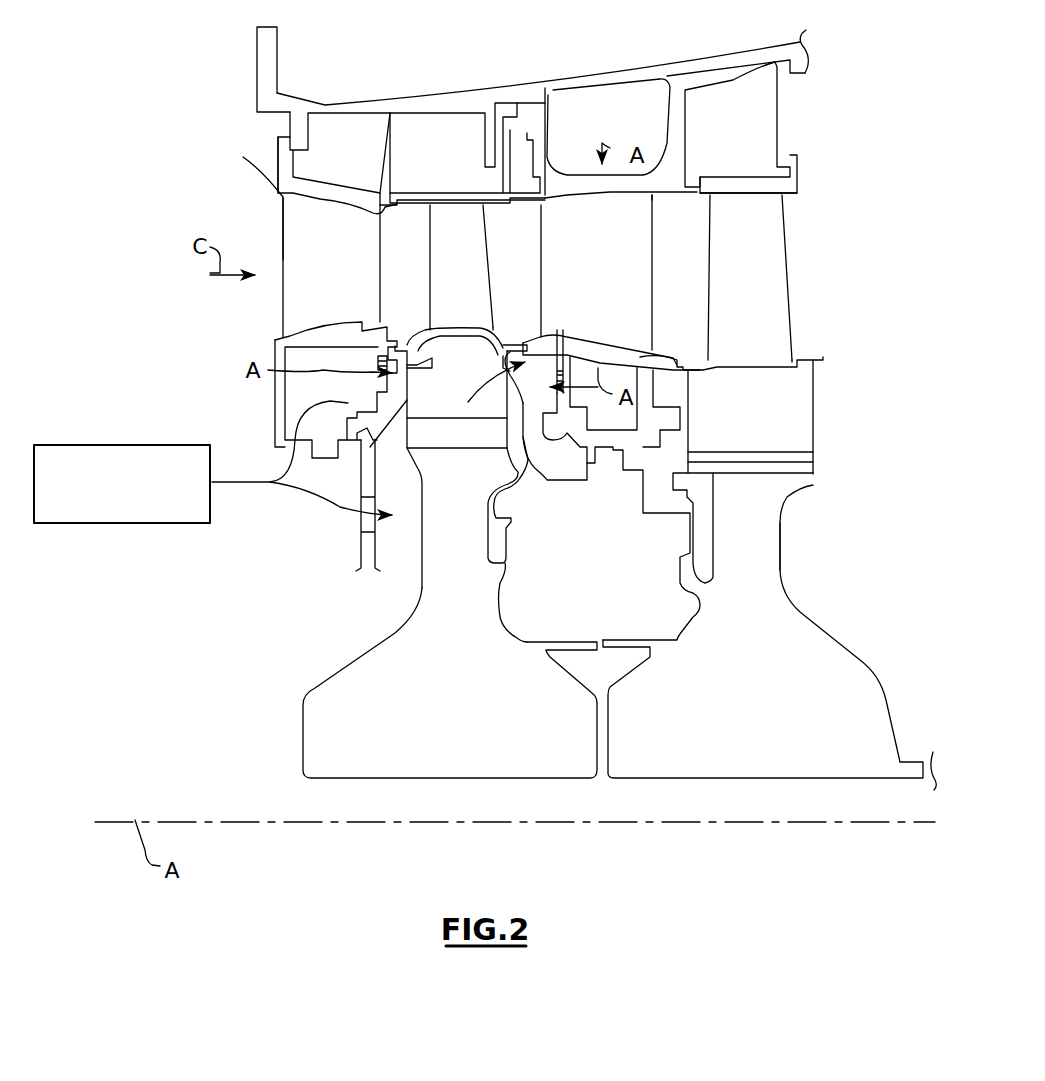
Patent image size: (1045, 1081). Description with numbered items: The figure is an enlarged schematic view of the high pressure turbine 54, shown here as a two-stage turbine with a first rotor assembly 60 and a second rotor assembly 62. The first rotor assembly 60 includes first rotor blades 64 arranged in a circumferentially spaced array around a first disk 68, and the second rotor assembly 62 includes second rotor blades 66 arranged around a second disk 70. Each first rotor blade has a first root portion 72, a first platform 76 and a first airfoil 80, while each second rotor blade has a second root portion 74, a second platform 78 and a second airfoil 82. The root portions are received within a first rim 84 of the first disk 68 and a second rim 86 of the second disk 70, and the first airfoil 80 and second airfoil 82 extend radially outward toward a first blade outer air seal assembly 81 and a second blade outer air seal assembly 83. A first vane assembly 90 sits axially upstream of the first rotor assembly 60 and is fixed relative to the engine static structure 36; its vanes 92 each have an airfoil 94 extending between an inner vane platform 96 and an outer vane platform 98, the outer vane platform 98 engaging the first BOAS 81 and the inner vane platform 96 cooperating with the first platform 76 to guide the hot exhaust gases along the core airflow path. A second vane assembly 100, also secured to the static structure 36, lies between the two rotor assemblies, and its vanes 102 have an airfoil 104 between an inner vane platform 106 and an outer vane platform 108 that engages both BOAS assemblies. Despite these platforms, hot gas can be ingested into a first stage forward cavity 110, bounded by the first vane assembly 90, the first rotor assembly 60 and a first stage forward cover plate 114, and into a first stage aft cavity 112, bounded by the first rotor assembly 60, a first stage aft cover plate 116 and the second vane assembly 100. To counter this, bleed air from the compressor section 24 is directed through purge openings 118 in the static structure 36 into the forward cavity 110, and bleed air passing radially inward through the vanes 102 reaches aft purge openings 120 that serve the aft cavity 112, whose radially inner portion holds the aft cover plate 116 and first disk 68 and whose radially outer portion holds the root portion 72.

The compressor section 24 is at (122, 445).
The engine static structure 36 is at (505, 88).
The high pressure turbine 54 is at (869, 382).
The first rotor assembly 60 is at (368, 600).
The second rotor assembly 62 is at (866, 632).
The first rotor blades 64 is at (404, 262).
The second rotor blades 66 is at (822, 274).
The first disk 68 is at (497, 620).
The second disk 70 is at (800, 611).
The first root portion 72 is at (445, 370).
The second root portion 74 is at (744, 422).
The first platform 76 is at (413, 337).
The second platform 78 is at (818, 357).
The first airfoil 80 is at (445, 299).
The first blade outer air seal assembly 81 is at (423, 207).
The second airfoil 82 is at (733, 284).
The second blade outer air seal assembly 83 is at (797, 195).
The first rim 84 is at (435, 437).
The second rim 86 is at (813, 462).
The first vane assembly 90 is at (340, 130).
The vanes 92 is at (274, 232).
The airfoil 94 is at (320, 280).
The inner vane platform 96 is at (280, 340).
The outer vane platform 98 is at (270, 185).
The second vane assembly 100 is at (607, 120).
The vanes 102 is at (539, 291).
The airfoil 104 is at (582, 282).
The inner vane platform 106 is at (660, 357).
The outer vane platform 108 is at (662, 195).
The first stage forward cavity 110 is at (400, 381).
The first stage aft cavity 112 is at (493, 417).
The first stage forward cover plate 114 is at (361, 467).
The first stage aft cover plate 116 is at (541, 463).
The purge openings 118 is at (378, 362).
The aft purge openings 120 is at (560, 330).